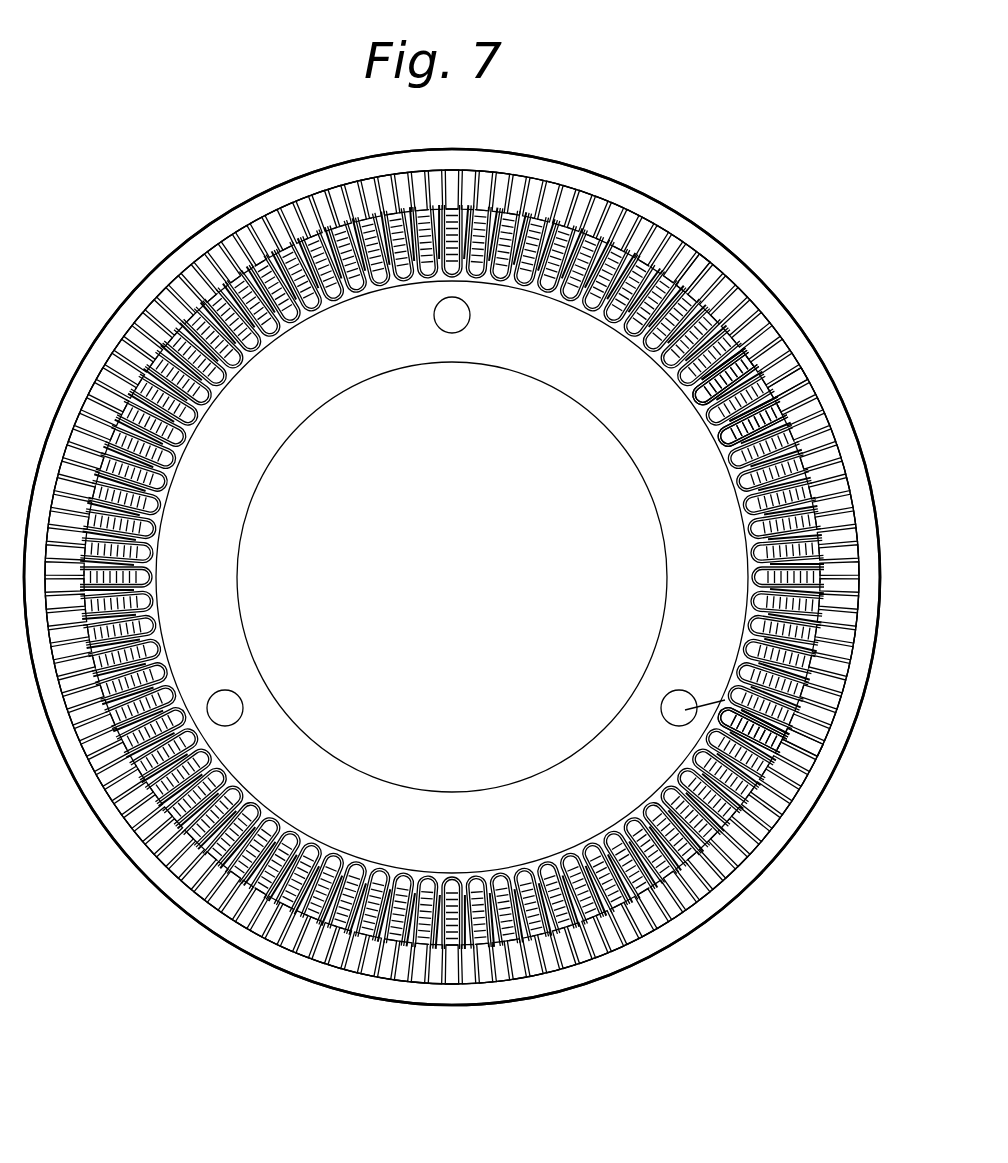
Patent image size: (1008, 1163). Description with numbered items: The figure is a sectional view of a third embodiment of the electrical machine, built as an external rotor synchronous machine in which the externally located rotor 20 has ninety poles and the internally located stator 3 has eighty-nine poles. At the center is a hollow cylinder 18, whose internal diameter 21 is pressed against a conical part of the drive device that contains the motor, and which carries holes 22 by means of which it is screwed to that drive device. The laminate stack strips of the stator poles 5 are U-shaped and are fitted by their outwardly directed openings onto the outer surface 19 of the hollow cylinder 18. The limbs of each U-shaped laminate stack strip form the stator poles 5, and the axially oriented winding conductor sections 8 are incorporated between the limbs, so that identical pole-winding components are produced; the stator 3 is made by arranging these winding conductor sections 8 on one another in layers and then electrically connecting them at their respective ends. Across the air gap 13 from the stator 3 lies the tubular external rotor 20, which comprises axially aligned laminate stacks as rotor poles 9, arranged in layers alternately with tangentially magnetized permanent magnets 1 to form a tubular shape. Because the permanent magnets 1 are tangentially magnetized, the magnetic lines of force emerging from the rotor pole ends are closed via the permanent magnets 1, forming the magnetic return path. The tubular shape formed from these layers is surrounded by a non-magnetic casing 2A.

The permanent magnet 1 is at (697, 268).
The non-magnetic casing 2A is at (662, 215).
The stator 3 is at (653, 794).
The stator pole 5 is at (753, 395).
The winding conductor section 8 is at (750, 365).
The rotor pole 9 is at (687, 257).
The air gap 13 is at (763, 410).
The hollow cylinder 18 is at (697, 672).
The outer surface 19 is at (777, 755).
The rotor 20 is at (566, 993).
The internal diameter 21 is at (652, 490).
The hole 22 is at (777, 722).